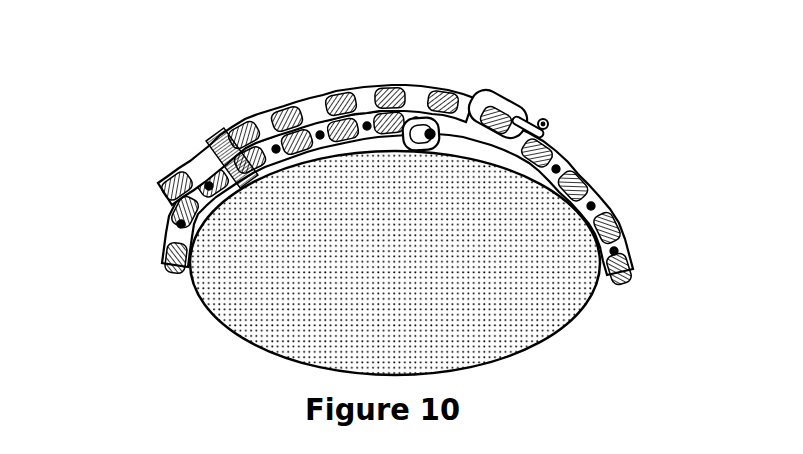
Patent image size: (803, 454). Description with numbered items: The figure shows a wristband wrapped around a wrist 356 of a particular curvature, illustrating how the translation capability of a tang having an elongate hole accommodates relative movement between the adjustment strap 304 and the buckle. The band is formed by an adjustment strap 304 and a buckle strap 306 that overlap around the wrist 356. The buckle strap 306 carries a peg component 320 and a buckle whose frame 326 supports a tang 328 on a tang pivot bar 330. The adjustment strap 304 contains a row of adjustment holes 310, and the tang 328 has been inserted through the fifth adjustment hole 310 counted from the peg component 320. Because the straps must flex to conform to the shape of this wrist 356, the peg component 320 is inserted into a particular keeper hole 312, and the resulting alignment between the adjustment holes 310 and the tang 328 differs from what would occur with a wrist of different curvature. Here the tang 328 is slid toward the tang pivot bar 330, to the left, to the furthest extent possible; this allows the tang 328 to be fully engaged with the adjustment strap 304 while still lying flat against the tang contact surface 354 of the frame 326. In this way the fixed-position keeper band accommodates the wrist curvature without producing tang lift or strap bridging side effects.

The adjustment strap 304 is at (200, 168).
The buckle strap 306 is at (173, 198).
The adjustment hole 310 is at (614, 251).
The keeper hole 312 is at (367, 126).
The peg component 320 is at (225, 155).
The frame 326 is at (547, 121).
The tang 328 is at (468, 107).
The tang pivot bar 330 is at (435, 152).
The tang contact surface 354 is at (536, 113).
The wrist 356 is at (478, 292).